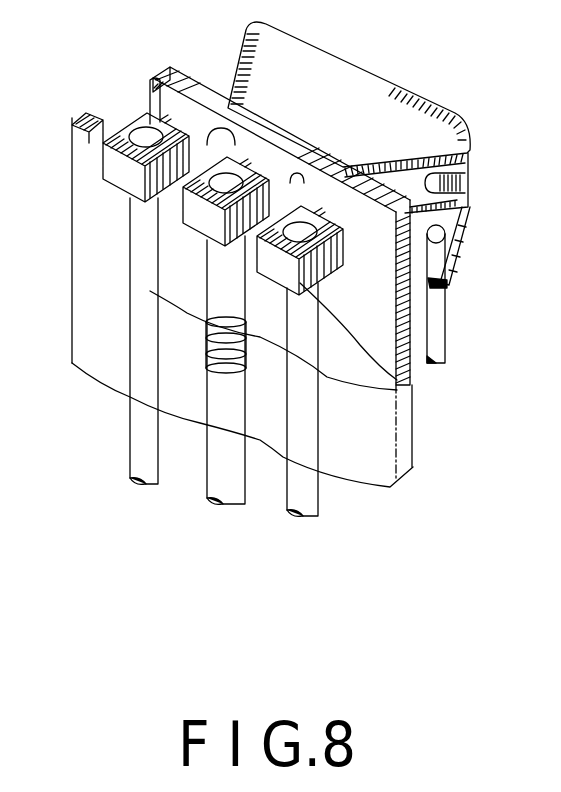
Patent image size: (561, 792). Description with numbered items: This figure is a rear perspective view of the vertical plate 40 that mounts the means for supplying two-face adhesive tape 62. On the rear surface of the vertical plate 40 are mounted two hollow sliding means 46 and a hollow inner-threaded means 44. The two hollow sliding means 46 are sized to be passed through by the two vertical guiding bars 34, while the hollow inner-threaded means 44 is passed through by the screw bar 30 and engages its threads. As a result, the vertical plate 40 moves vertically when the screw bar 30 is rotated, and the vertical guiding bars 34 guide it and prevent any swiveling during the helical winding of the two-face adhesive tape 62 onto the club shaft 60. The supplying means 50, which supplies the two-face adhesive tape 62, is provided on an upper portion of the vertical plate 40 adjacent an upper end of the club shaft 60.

The screw bar 30 is at (213, 460).
The vertical guiding bars 34 is at (145, 291).
The vertical plate 40 is at (185, 92).
The hollow inner-threaded means 44 is at (185, 207).
The hollow sliding means 46 is at (398, 383).
The supplying means 50 is at (388, 88).
The club shaft 60 is at (446, 322).
The two-face adhesive tape 62 is at (470, 176).